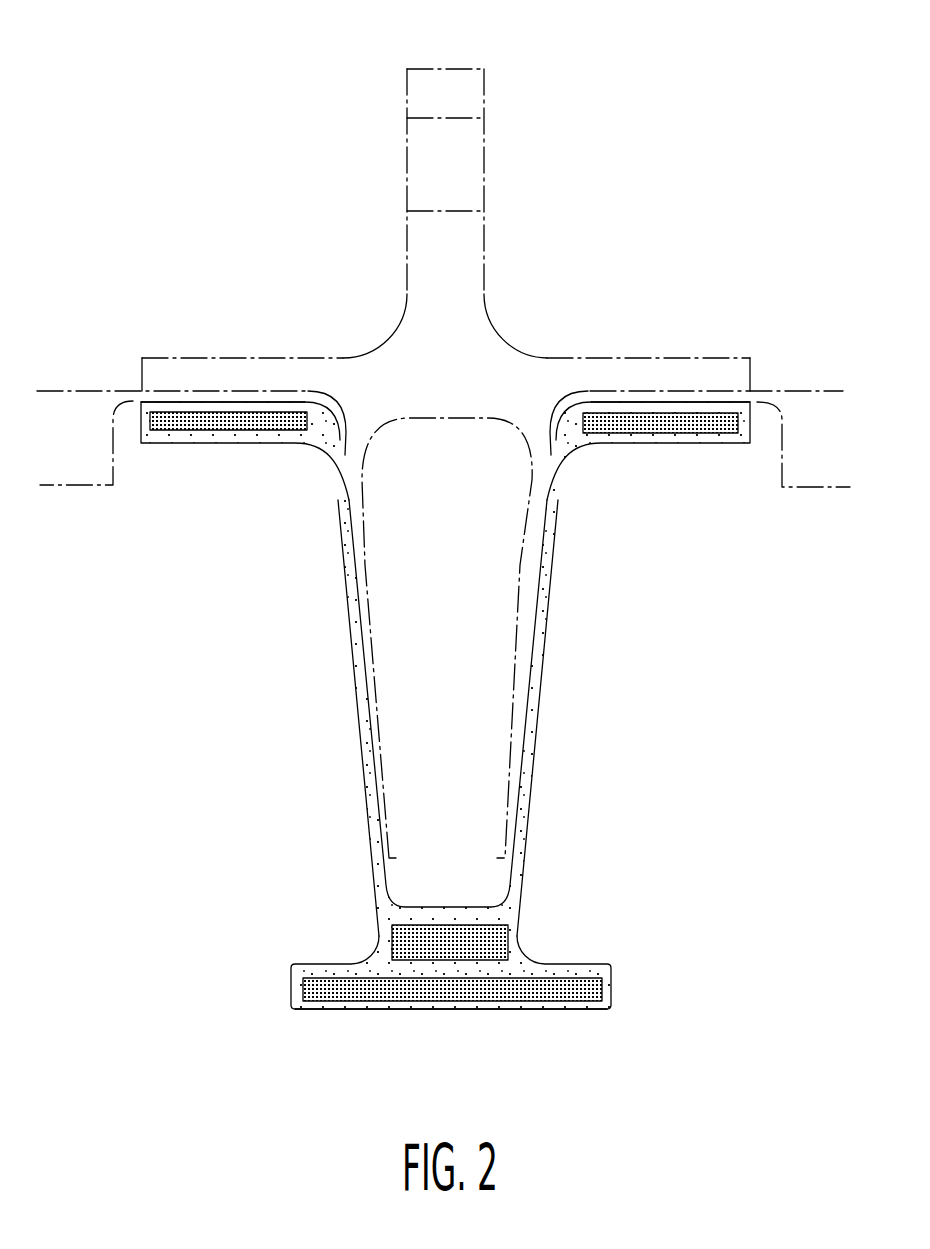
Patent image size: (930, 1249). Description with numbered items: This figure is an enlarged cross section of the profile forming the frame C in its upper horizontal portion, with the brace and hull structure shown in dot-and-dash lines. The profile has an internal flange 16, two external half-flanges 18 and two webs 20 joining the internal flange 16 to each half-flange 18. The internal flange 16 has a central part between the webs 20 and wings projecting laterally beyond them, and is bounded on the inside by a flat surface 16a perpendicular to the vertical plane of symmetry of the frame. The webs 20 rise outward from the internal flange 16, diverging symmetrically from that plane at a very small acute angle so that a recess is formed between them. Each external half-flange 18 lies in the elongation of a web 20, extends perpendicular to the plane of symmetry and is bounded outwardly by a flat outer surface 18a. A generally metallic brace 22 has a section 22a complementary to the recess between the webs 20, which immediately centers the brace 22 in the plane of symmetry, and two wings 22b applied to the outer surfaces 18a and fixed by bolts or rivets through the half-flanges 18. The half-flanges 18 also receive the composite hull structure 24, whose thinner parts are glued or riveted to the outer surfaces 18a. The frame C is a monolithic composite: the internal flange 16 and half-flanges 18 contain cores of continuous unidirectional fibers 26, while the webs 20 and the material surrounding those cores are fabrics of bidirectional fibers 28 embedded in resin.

The frame C is at (326, 733).
The internal flange 16 is at (554, 1020).
The surface 16a is at (332, 1010).
The external half-flanges 18 is at (160, 388).
The outer surfaces 18a is at (232, 402).
The webs 20 is at (347, 684).
The braces 22 is at (401, 110).
The section 22a is at (510, 716).
The wings 22b is at (300, 357).
The hull structure 24 is at (782, 474).
The unidirectional fibers 26 is at (205, 422).
The bidirectional fibers 28 is at (338, 505).